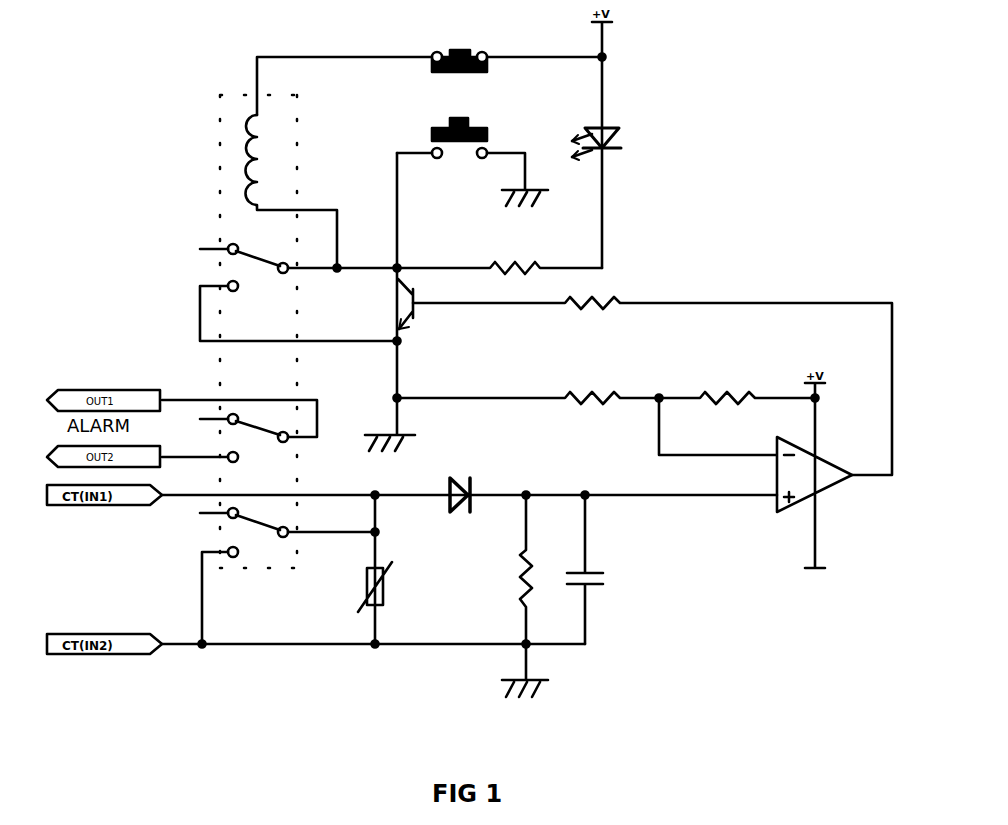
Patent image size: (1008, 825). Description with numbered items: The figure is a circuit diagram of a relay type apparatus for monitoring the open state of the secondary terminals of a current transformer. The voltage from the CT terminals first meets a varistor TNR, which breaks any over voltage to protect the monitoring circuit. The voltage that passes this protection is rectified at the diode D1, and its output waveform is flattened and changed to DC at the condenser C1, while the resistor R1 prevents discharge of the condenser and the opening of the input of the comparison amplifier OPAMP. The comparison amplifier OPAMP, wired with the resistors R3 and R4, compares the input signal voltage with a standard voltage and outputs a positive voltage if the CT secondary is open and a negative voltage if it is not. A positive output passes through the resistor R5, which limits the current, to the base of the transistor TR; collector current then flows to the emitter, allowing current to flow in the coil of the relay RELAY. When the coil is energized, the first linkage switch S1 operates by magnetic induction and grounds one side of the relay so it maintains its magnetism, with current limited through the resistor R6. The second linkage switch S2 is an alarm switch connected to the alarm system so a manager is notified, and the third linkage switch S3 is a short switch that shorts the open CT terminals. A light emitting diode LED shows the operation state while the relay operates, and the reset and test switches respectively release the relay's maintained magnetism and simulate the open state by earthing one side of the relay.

The relay RELAY is at (260, 331).
The first linkage switch S1 is at (353, 188).
The second linkage switch (alarm switch) S2 is at (355, 281).
The third linkage switch (short switch) S3 is at (287, 573).
The light emitting diode LED is at (608, 162).
The transistor TR is at (399, 359).
The resistor R1 is at (526, 595).
The resistor R3 is at (739, 390).
The resistor R4 is at (530, 390).
The resistor R5 is at (652, 377).
The resistor R6 is at (498, 258).
The condenser C1 is at (591, 568).
The diode D1 is at (460, 485).
The varistor TNR is at (365, 570).
The comparison amplifier OPAMP is at (760, 493).